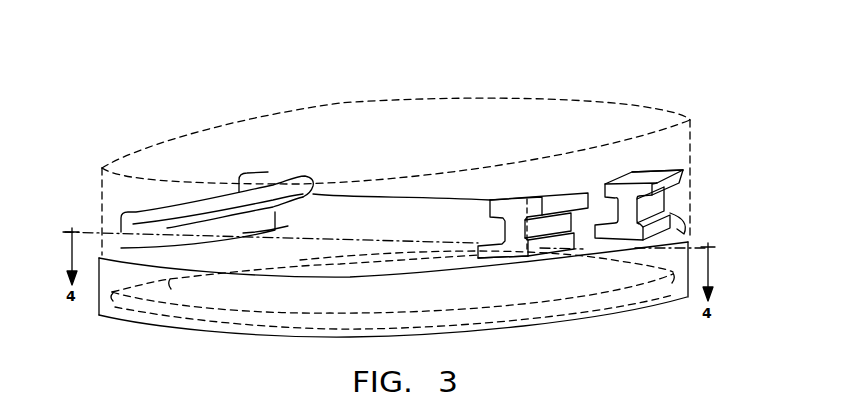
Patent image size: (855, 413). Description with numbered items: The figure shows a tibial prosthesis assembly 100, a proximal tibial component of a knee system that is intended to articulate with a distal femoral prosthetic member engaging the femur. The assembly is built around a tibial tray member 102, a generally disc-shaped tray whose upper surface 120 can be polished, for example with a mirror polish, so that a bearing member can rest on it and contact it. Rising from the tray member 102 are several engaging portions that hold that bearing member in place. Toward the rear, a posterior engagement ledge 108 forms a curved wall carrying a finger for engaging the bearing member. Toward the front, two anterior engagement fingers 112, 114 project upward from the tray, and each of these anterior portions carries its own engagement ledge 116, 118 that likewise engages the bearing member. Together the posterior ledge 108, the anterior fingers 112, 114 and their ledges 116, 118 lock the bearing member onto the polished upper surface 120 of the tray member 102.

The tibial prosthesis assembly 100 is at (624, 55).
The tibial tray member 102 is at (620, 327).
The posterior engagement ledge 108 is at (256, 190).
The anterior engagement finger 112 is at (547, 184).
The anterior engagement finger 114 is at (657, 160).
The engagement ledge 116 is at (497, 202).
The engagement ledge 118 is at (611, 172).
The upper surface 120 is at (335, 200).